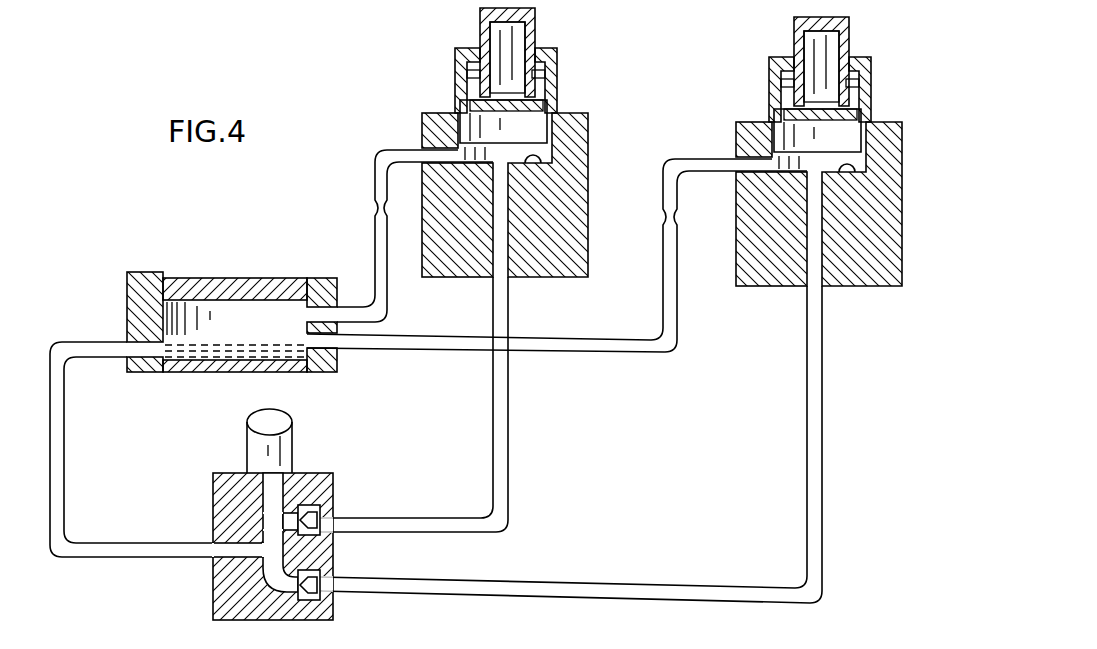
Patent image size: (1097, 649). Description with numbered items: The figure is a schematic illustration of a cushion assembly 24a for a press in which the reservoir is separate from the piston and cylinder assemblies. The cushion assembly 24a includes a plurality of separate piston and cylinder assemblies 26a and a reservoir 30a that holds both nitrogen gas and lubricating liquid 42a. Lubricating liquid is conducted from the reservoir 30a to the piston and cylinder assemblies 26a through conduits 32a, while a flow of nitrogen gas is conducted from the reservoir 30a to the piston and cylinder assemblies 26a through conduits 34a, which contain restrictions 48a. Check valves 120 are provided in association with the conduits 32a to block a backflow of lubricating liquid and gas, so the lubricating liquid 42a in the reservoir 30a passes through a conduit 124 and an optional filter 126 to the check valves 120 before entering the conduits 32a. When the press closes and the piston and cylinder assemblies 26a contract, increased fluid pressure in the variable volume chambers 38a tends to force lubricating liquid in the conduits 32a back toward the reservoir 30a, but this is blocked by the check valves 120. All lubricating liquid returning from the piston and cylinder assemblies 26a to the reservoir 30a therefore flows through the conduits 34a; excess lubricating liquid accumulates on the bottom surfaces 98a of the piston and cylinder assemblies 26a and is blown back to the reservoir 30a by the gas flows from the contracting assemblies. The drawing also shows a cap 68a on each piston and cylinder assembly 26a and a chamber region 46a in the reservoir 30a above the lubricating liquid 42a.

The cushion assembly 24a is at (312, 114).
The piston and cylinder assemblies 26a is at (566, 57).
The reservoir 30a is at (239, 272).
The conduits 32a is at (511, 490).
The conduits 34a is at (371, 258).
The variable volume chambers 38a is at (542, 150).
The lubricating liquid 42a is at (207, 354).
The reservoir chamber 46a is at (185, 316).
The restrictions 48a is at (372, 211).
The cap 68a is at (480, 11).
The bottom surfaces 98a is at (543, 164).
The check valves 120 is at (321, 515).
The conduit 124 is at (98, 560).
The filter 126 is at (271, 455).